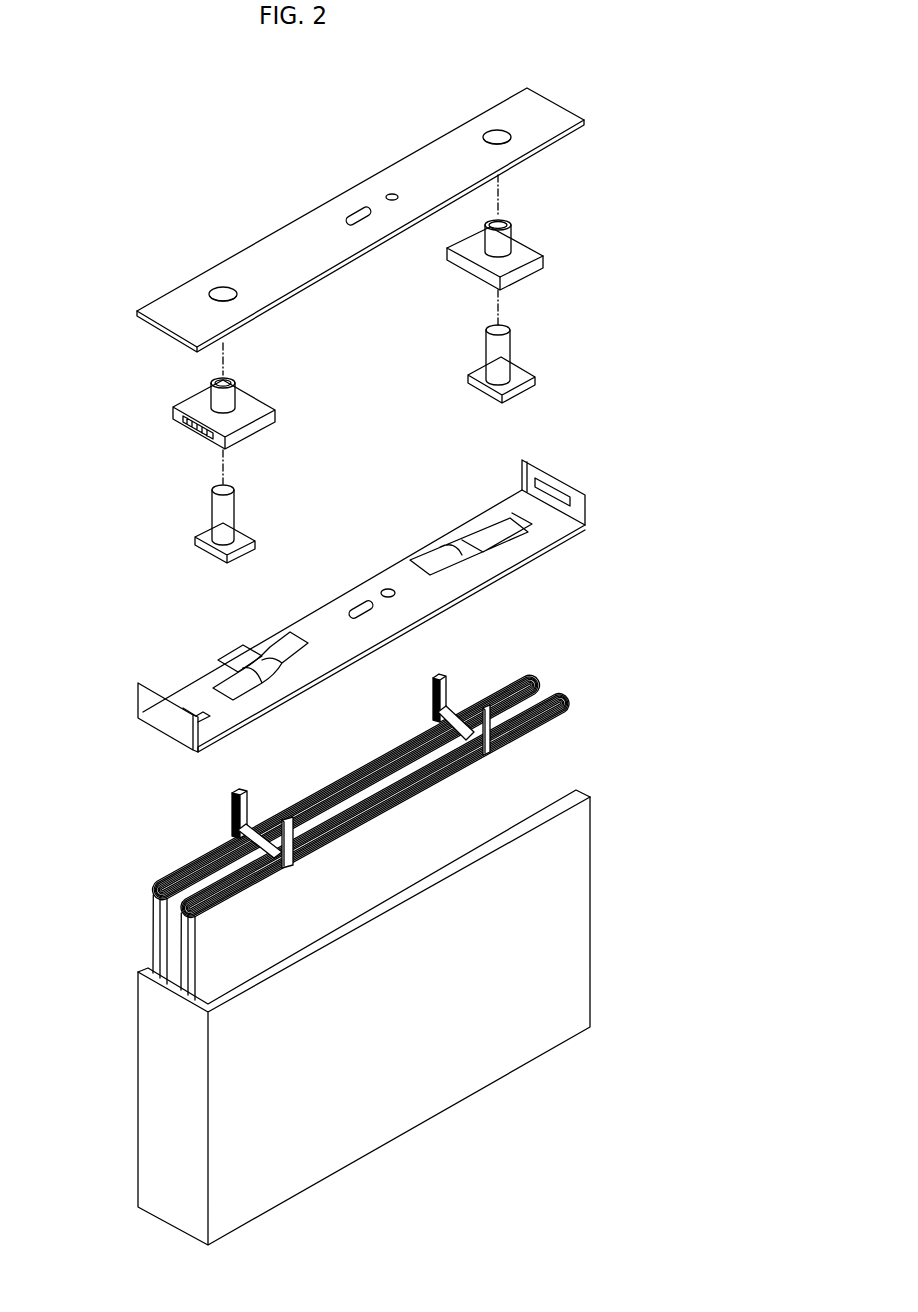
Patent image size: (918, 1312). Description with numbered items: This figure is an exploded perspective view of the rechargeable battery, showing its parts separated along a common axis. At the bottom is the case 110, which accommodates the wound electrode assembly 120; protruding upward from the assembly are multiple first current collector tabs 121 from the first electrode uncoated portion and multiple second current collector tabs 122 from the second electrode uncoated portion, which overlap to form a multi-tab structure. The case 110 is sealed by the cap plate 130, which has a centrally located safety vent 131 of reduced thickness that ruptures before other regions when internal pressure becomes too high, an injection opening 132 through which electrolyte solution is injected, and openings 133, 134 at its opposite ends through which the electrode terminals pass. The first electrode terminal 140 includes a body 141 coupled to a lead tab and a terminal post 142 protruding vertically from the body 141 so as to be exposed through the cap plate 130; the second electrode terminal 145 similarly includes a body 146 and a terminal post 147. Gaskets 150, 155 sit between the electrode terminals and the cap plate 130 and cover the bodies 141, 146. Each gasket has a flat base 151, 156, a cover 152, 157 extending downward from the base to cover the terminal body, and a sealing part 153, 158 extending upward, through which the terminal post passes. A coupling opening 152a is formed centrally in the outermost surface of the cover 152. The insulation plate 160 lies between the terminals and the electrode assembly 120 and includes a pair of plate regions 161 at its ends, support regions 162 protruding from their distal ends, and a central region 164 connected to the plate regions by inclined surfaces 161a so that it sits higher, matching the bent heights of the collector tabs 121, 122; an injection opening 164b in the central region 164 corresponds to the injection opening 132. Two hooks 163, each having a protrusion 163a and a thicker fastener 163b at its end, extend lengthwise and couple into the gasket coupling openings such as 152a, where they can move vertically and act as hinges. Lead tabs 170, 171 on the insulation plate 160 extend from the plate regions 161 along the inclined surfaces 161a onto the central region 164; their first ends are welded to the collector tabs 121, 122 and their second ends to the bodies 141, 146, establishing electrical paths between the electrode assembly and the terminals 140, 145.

The case 110 is at (147, 1096).
The electrode assembly 120 is at (321, 837).
The first current collector tab 121 is at (283, 828).
The second current collector tab 122 is at (434, 700).
The cap plate 130 is at (327, 207).
The safety vent 131 is at (351, 210).
The injection opening 132 is at (392, 193).
The opening 133 is at (220, 287).
The opening 134 is at (493, 130).
The first electrode terminal 140 is at (207, 524).
The body 141 is at (203, 539).
The terminal post 142 is at (240, 494).
The second electrode terminal 145 is at (542, 361).
The body 146 is at (522, 382).
The terminal post 147 is at (511, 330).
The gasket 150 is at (227, 394).
The base 151 is at (256, 400).
The cover 152 is at (276, 418).
The coupling opening 152a is at (195, 430).
The sealing part 153 is at (232, 380).
The gasket 155 is at (547, 229).
The base 156 is at (560, 250).
The cover 157 is at (560, 264).
The sealing part 158 is at (506, 221).
The insulation plate 160 is at (307, 629).
The plate region 161 is at (228, 750).
The inclined surface 161a is at (234, 656).
The support region 162 is at (161, 722).
The hook 163 is at (177, 648).
The protrusion 163a is at (177, 695).
The fastener 163b is at (207, 703).
The central region 164 is at (420, 600).
The injection opening 164b is at (388, 589).
The lead tab 170 is at (246, 690).
The lead tab 171 is at (462, 578).